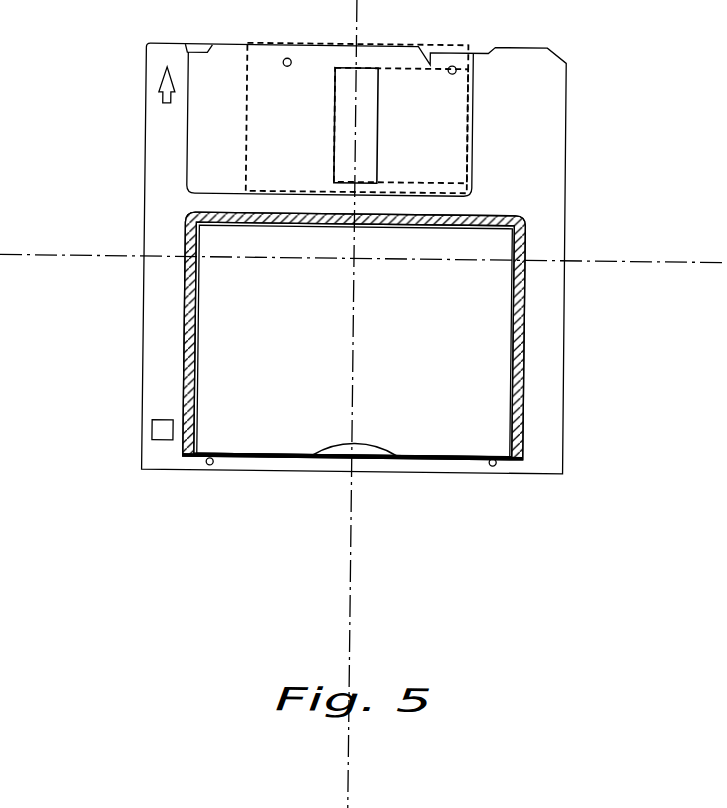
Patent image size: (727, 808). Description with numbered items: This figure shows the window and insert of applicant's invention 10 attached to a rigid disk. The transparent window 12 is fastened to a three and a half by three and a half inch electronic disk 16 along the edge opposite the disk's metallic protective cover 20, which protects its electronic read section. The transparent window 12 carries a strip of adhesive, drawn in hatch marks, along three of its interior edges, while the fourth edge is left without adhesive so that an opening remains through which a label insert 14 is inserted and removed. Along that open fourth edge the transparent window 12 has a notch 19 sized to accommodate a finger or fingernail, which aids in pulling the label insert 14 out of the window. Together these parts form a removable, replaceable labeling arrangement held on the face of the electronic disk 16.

The invention 10 is at (176, 379).
The transparent window 12 is at (525, 428).
The label insert 14 is at (484, 316).
The electronic disk 16 is at (174, 205).
The notch 19 is at (355, 453).
The metallic protective cover 20 is at (244, 158).